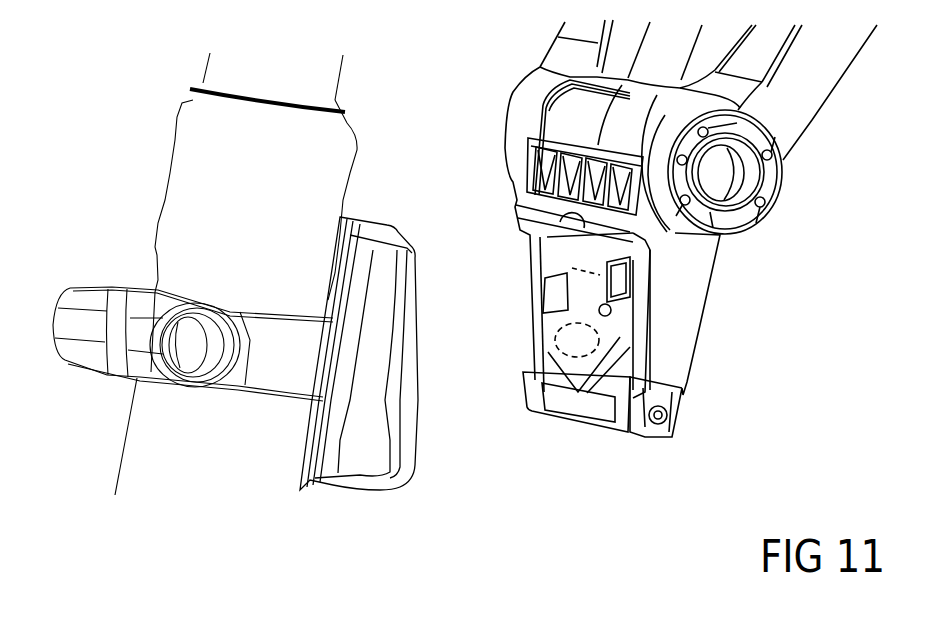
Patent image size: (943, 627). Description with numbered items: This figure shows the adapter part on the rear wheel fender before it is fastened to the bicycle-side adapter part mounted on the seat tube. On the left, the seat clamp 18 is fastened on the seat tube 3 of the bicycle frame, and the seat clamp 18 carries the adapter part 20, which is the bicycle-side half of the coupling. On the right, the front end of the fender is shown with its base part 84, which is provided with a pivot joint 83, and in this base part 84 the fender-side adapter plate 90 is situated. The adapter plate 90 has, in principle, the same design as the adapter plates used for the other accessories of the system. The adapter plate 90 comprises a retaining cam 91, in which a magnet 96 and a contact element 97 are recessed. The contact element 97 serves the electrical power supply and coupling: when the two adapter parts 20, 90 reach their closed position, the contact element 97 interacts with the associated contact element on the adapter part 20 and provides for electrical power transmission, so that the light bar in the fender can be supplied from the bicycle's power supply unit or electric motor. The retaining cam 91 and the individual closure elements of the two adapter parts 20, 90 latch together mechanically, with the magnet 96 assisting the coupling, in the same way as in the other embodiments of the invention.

The seat tube 3 is at (173, 442).
The seat clamp 18 is at (78, 248).
The adapter part 20 is at (436, 434).
The pivot joint 83 is at (747, 192).
The base part 84 is at (692, 255).
The adapter plate 90 is at (774, 321).
The retaining cam 91 is at (563, 368).
The magnet 96 is at (575, 343).
The contact element 97 is at (538, 280).